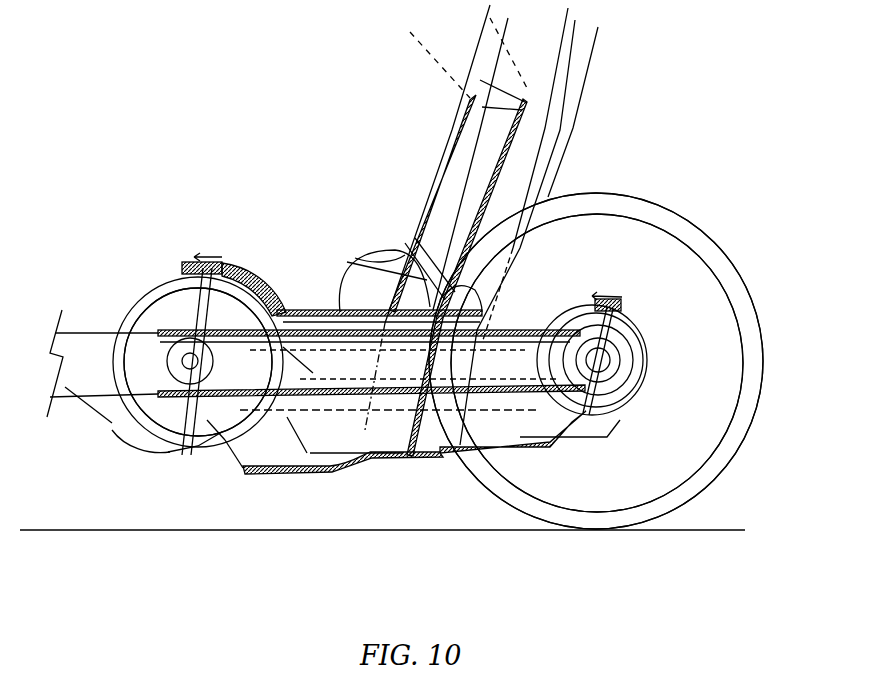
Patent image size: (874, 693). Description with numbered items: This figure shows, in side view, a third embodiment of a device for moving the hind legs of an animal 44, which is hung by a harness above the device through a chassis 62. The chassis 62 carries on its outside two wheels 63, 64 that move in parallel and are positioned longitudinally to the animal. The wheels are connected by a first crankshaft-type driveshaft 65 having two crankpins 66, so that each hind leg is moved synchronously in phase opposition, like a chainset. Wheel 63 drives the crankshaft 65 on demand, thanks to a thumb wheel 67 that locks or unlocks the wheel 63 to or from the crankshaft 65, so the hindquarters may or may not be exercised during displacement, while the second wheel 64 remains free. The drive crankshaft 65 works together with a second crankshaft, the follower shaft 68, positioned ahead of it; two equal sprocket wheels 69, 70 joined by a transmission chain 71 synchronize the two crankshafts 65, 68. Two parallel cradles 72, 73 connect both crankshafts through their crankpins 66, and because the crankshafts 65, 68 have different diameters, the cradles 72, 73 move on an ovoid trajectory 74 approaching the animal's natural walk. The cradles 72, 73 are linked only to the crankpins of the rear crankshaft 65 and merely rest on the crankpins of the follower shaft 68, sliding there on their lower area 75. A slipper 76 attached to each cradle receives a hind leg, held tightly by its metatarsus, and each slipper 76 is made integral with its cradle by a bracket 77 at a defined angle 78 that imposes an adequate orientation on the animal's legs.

The animal 44 is at (431, 70).
The chassis 62 is at (103, 420).
The wheel 63 is at (736, 282).
The wheel 64 is at (596, 361).
The crankshaft-type driveshaft 65 is at (627, 397).
The crankpins 66 is at (188, 285).
The thumb wheel 67 is at (646, 368).
The follower shaft 68 is at (155, 332).
The sprocket wheel 69 is at (641, 333).
The sprocket wheel 70 is at (113, 358).
The transmission chain 71 is at (200, 392).
The cradle 72 is at (292, 292).
The cradle 73 is at (243, 478).
The ovoid trajectory 74 is at (360, 440).
The lower area 75 is at (110, 432).
The slipper 76 is at (353, 262).
The bracket 77 is at (425, 262).
The angle 78 is at (395, 250).